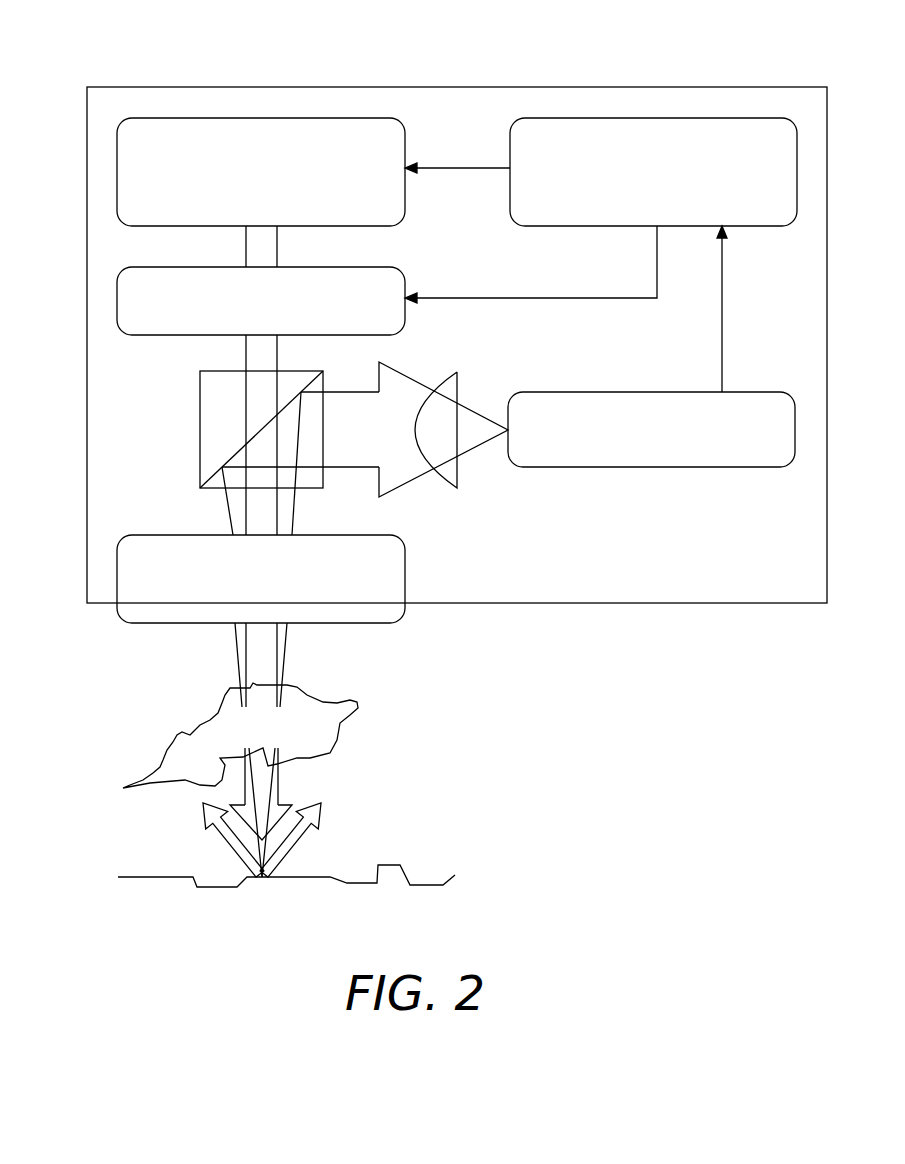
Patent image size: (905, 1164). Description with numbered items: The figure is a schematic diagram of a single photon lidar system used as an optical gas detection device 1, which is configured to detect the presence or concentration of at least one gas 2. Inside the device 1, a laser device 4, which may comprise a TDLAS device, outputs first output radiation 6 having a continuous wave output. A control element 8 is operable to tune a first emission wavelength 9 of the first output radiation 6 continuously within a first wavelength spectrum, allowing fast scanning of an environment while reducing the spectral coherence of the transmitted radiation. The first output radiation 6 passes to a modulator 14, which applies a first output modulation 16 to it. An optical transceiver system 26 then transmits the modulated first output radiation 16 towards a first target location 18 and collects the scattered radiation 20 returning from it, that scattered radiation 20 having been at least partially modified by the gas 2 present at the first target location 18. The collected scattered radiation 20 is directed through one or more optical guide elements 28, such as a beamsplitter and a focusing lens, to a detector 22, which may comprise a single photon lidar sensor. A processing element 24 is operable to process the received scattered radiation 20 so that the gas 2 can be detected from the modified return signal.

The optical device 1 is at (740, 62).
The gas 2 is at (363, 742).
The laser device 4 is at (261, 172).
The first output radiation 6 is at (277, 238).
The control element 8 is at (601, 210).
The first emission wavelength 9 is at (246, 232).
The modulator 14 is at (261, 301).
The first output modulation 16 is at (277, 350).
The first target location 18 is at (140, 877).
The scattered radiation 20 is at (226, 505).
The detector 22 is at (651, 346).
The processing element 24 is at (797, 170).
The optical transceiver system 26 is at (261, 579).
The optical guide elements 28 is at (200, 394).